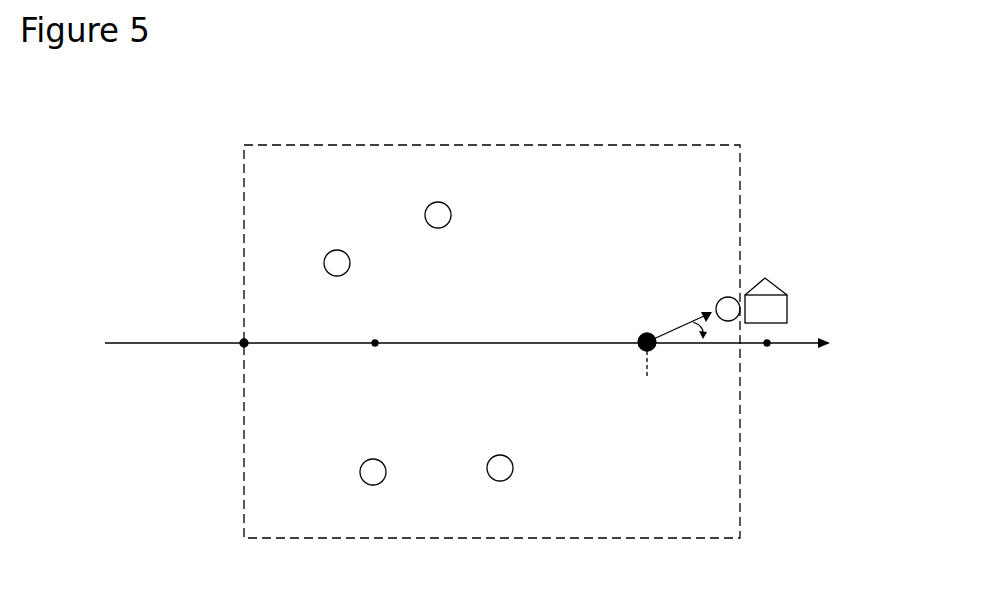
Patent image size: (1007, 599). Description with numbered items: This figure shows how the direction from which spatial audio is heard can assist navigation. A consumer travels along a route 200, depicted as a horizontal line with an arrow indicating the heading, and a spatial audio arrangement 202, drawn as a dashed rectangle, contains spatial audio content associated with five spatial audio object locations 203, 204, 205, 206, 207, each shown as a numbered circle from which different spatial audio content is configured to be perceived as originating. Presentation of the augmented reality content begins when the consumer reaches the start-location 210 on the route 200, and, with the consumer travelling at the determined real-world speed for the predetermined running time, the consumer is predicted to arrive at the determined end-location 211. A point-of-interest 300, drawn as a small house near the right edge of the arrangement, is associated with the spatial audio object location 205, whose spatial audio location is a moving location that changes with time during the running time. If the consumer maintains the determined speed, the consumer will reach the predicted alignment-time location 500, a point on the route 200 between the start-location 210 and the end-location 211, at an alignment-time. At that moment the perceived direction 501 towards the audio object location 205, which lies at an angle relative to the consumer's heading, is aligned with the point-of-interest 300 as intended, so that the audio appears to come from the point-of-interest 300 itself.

The route 200 is at (147, 347).
The spatial audio arrangement 202 is at (423, 143).
The spatial audio object location 203 is at (326, 256).
The spatial audio object location 204 is at (428, 206).
The spatial audio object location 205 is at (725, 297).
The spatial audio object location 206 is at (510, 478).
The spatial audio object location 207 is at (360, 476).
The start-location 210 is at (237, 340).
The end-location 211 is at (742, 346).
The point-of-interest 300 is at (782, 310).
The predicted alignment-time location 500 is at (655, 346).
The perceived direction 501 is at (688, 320).